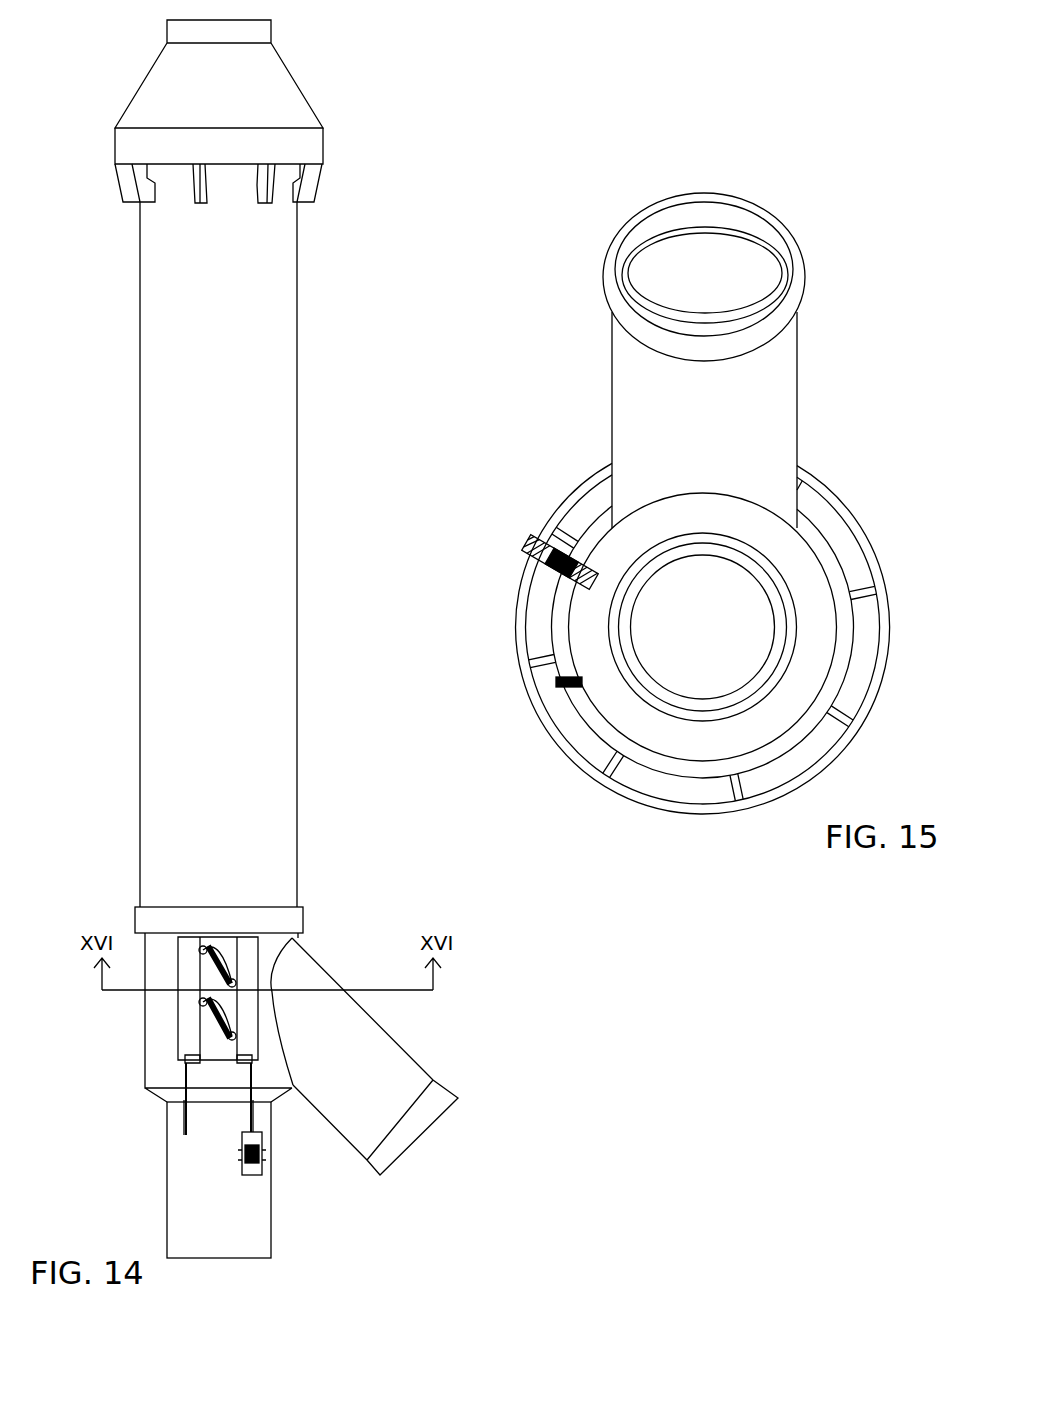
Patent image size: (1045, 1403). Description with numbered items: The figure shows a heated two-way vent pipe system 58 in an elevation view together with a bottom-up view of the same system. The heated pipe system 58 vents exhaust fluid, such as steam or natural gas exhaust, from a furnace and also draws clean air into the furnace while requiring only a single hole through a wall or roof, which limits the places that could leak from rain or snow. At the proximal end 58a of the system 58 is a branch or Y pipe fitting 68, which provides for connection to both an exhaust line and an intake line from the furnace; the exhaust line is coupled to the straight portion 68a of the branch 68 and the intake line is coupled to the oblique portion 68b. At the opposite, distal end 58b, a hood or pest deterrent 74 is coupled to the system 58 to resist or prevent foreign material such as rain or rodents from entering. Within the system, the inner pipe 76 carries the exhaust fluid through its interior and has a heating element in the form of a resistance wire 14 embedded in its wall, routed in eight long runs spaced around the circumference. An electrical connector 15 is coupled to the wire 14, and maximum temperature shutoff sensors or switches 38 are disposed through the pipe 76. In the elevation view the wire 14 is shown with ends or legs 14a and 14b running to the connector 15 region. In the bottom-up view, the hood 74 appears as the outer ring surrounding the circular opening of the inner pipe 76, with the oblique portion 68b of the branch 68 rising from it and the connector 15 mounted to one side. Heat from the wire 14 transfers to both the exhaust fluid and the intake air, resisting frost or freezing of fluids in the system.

In FIG. 14, the resistance wire 14 is at (251, 1075).
In FIG. 14, the tube end 14a is at (268, 1120).
In FIG. 14, the tube end 14b is at (169, 1123).
In FIG. 14, the electrical connector 15 is at (247, 1175).
In FIG. 15, the electrical connector 15 is at (522, 545).
In FIG. 14, the maximum temperature shutoff sensors or switches 38 is at (235, 945).
In FIG. 14, the heated two-way vent pipe system 58 is at (366, 362).
In FIG. 14, the proximal end 58a is at (343, 879).
In FIG. 14, the distal end 58b is at (315, 111).
In FIG. 14, the branch or Y pipe fitting 68 is at (302, 1098).
In FIG. 14, the straight portion 68a is at (171, 1210).
In FIG. 14, the oblique portion 68b is at (440, 1087).
In FIG. 15, the oblique portion 68b is at (782, 355).
In FIG. 14, the hood or pest deterrent 74 is at (275, 101).
In FIG. 15, the hood or pest deterrent 74 is at (848, 500).
In FIG. 15, the inner pipe 76 is at (695, 695).